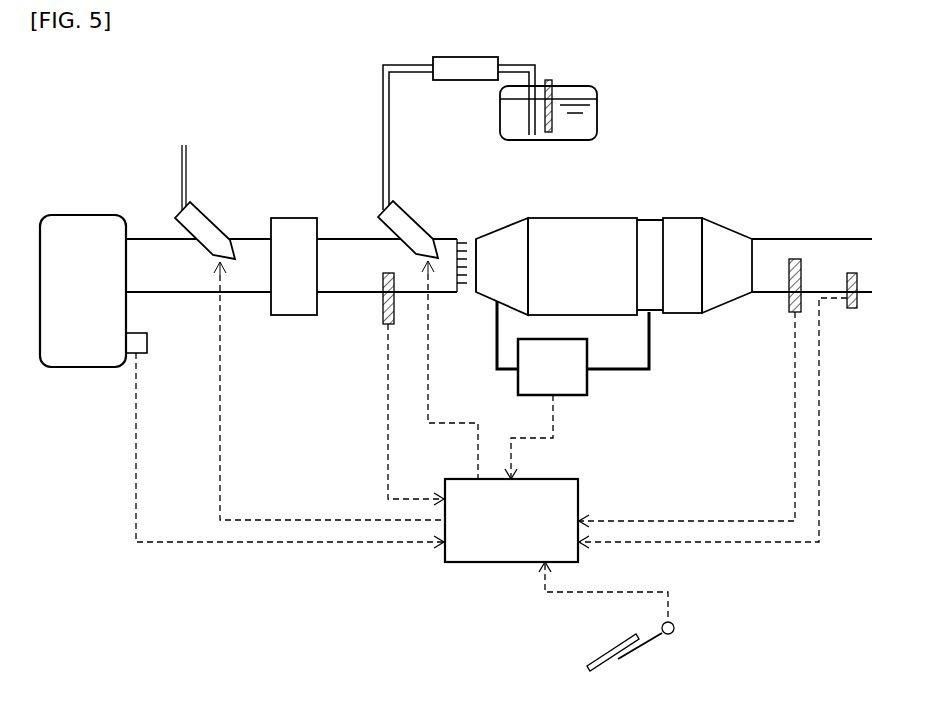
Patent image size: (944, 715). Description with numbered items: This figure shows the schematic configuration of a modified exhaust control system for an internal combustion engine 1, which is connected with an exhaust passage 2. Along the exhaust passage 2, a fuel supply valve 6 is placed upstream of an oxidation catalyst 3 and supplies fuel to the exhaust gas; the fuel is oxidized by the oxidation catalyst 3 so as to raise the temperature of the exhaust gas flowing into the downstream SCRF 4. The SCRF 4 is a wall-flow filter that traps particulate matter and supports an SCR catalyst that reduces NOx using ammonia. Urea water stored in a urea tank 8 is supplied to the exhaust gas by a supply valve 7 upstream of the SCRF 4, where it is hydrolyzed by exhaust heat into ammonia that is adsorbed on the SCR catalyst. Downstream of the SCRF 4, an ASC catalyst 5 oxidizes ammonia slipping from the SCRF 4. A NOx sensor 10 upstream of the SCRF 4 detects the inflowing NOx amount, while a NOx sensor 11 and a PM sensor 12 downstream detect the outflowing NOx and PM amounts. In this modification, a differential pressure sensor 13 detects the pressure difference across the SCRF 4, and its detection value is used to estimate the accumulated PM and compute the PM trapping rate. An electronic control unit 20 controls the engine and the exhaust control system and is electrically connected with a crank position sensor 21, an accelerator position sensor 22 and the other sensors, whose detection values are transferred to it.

The internal combustion engine 1 is at (84, 214).
The exhaust passage 2 is at (352, 238).
The oxidation catalyst 3 is at (297, 318).
The SCRF 4 is at (582, 238).
The ASC catalyst 5 is at (687, 232).
The fuel supply valve 6 is at (213, 220).
The supply valve 7 is at (414, 220).
The urea tank 8 is at (597, 102).
The NOx sensor 10 is at (385, 313).
The NOx sensor 11 is at (795, 258).
The PM sensor 12 is at (853, 312).
The differential pressure sensor 13 is at (590, 390).
The electronic control unit 20 is at (555, 478).
The crank position sensor 21 is at (147, 340).
The accelerator position sensor 22 is at (669, 636).